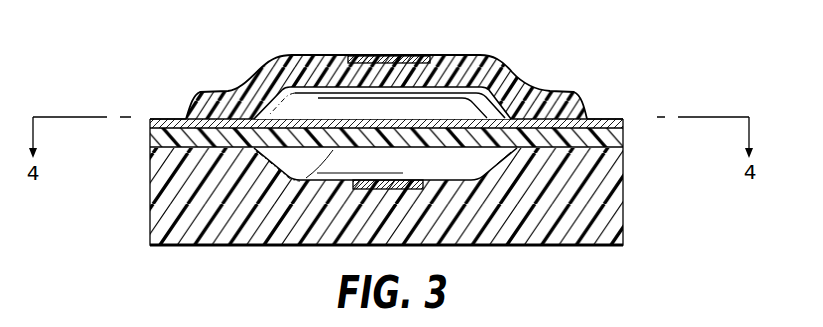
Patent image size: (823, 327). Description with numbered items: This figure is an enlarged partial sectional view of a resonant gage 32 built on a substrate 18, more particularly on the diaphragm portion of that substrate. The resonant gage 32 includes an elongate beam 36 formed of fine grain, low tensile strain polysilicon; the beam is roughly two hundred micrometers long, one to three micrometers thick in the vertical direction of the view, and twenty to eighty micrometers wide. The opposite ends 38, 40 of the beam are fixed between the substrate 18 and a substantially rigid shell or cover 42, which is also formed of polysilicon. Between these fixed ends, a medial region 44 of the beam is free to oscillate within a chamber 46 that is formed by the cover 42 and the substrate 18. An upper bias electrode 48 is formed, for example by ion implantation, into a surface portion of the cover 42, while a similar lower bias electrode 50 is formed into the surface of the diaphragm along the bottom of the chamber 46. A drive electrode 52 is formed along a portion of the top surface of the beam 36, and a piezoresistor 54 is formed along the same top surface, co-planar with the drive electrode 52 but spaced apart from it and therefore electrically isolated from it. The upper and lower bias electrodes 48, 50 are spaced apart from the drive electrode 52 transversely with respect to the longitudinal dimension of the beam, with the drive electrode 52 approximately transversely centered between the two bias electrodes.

The substrate 18 is at (166, 202).
The resonant gage 32 is at (376, 112).
The elongate beam 36 is at (508, 84).
The end of the beam 38 is at (158, 143).
The end of the beam 40 is at (623, 137).
The cover 42 is at (312, 65).
The medial region of the beam 44 is at (410, 132).
The chamber 46 is at (483, 86).
The upper bias electrode 48 is at (404, 60).
The lower bias electrode 50 is at (385, 190).
The drive electrode 52 is at (604, 118).
The piezoresistor 54 is at (171, 118).